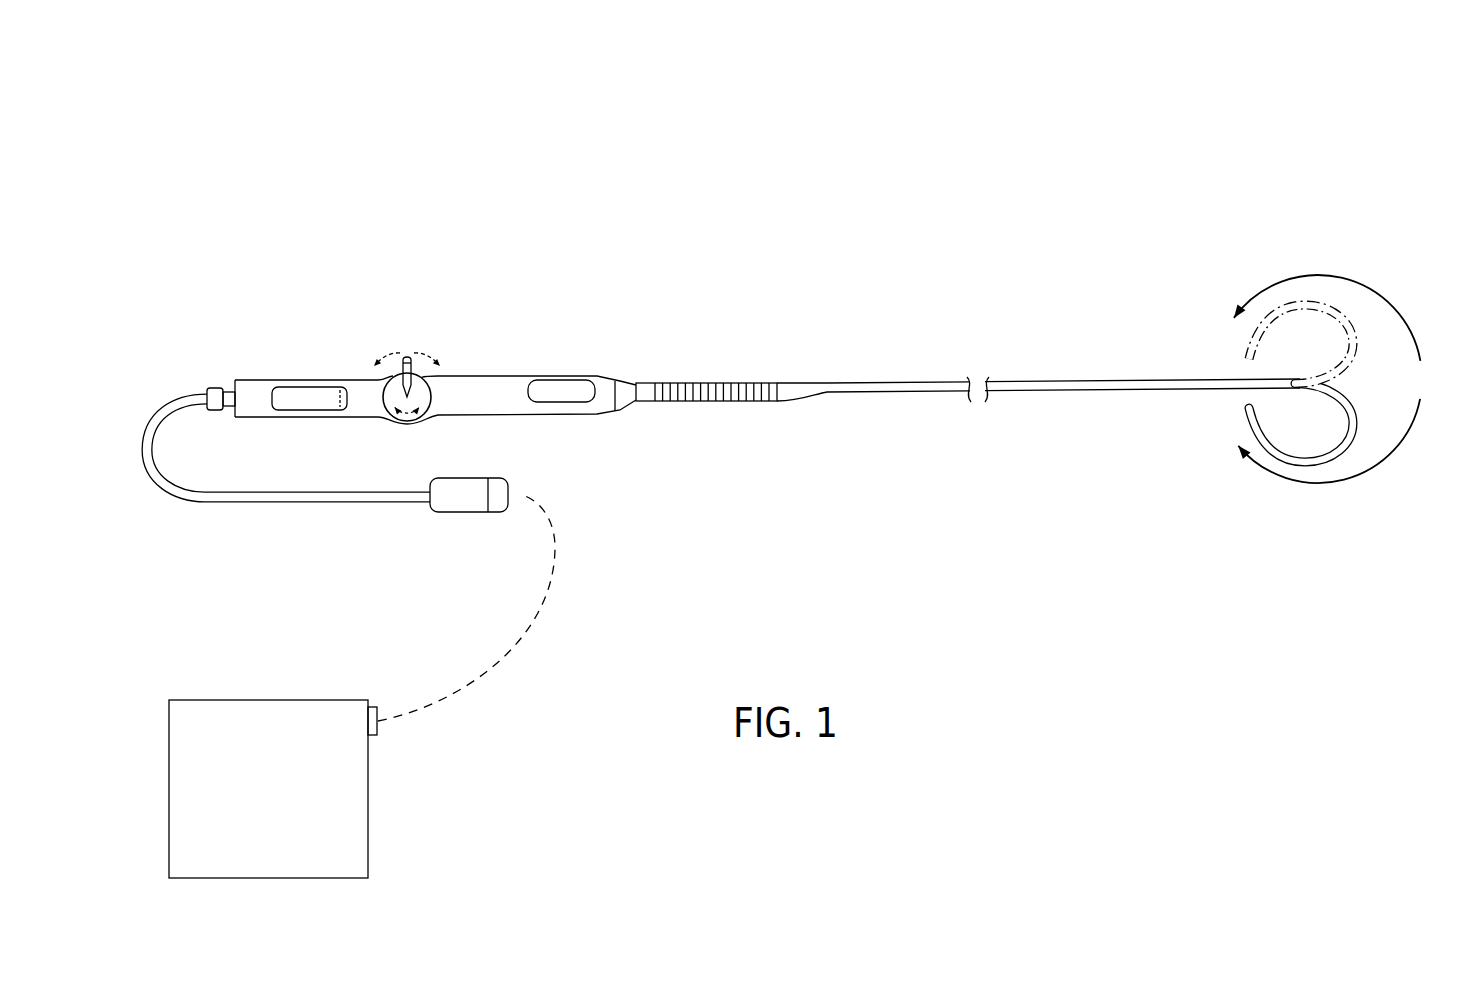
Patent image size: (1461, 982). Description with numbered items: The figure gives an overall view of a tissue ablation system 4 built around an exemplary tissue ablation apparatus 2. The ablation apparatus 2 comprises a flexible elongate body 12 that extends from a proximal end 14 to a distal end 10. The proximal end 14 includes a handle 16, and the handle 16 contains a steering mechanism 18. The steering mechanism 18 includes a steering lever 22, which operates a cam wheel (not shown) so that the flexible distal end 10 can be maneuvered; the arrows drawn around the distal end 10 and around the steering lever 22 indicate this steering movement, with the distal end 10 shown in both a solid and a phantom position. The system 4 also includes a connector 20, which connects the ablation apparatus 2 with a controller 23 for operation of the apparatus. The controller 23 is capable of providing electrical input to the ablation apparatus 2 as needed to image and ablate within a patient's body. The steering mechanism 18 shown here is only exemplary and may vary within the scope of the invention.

The catheter 2 is at (769, 310).
The catheter system 4 is at (160, 172).
The distal loop 10 is at (1378, 313).
The distal shaft section 12 is at (1064, 381).
The proximal shaft section 14 is at (897, 393).
The handle 16 is at (517, 384).
The rotation knob 18 is at (447, 343).
The connector 20 is at (474, 505).
The lever 22 is at (406, 355).
The controller 23 is at (368, 823).